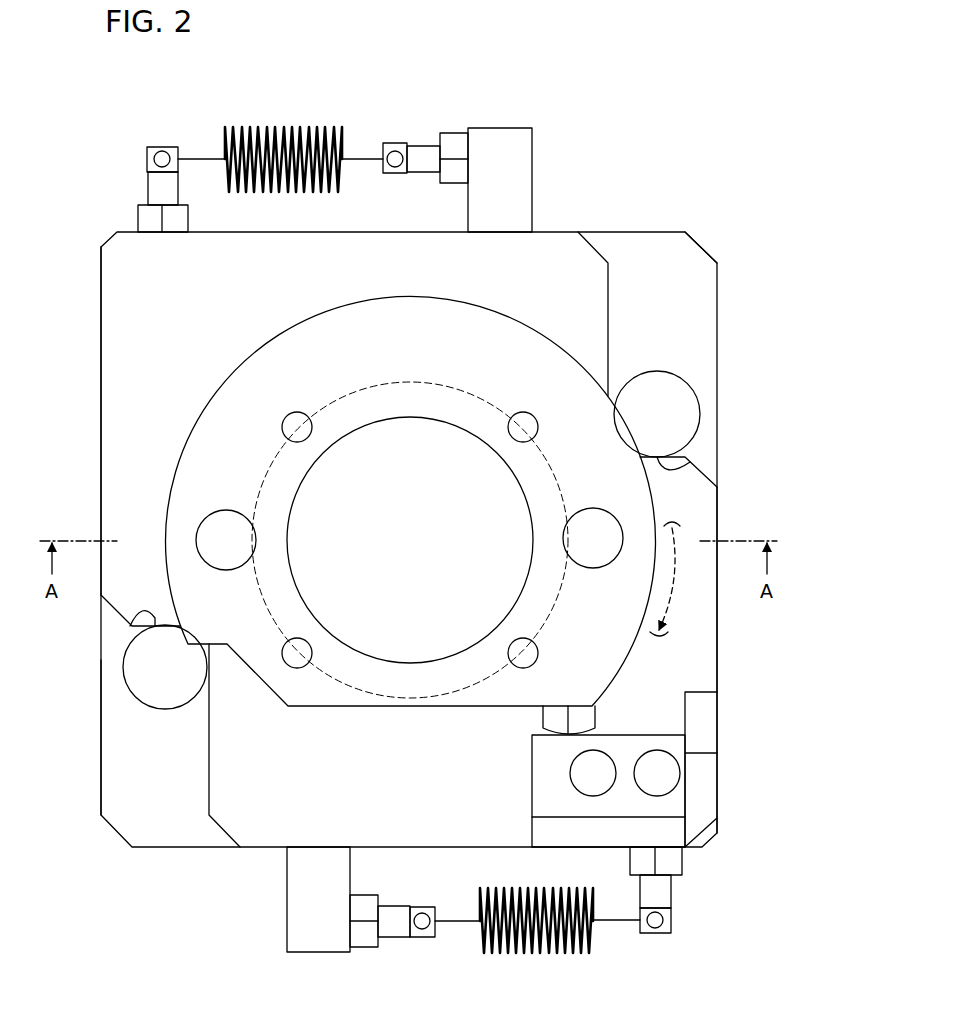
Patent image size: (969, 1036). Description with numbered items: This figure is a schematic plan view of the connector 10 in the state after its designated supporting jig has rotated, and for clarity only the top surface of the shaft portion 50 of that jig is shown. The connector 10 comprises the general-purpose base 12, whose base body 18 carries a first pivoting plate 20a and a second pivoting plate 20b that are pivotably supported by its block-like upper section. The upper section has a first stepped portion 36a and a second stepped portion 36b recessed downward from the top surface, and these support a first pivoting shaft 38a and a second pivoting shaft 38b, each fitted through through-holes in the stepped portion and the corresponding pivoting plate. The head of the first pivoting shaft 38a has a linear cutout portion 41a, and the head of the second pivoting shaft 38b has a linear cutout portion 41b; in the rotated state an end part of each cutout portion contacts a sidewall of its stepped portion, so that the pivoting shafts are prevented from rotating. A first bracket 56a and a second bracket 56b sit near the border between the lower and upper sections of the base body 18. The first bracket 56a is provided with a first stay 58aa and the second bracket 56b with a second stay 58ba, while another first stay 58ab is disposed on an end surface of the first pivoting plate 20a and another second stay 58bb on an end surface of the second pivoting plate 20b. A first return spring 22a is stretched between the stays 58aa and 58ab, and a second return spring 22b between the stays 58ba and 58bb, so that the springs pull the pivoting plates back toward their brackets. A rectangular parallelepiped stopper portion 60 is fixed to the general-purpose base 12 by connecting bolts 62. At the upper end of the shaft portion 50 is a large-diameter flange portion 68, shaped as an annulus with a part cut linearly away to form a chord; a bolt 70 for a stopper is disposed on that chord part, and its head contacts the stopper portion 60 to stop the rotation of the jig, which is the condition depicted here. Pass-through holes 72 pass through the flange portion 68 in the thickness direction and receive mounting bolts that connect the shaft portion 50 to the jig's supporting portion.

The connector 10 is at (688, 52).
The general-purpose base 12 is at (722, 297).
The base body 18 is at (648, 252).
The first pivoting plate 20a is at (717, 652).
The second pivoting plate 20b is at (101, 412).
The first return spring 22a is at (545, 932).
The second return spring 22b is at (293, 152).
The first stepped portion 36a is at (697, 258).
The second stepped portion 36b is at (127, 752).
The first pivoting shaft 38a is at (672, 411).
The second pivoting shaft 38b is at (142, 668).
The linear cutout portion 41a is at (697, 475).
The linear cutout portion 41b is at (130, 615).
The shaft portion 50 is at (421, 397).
The first bracket 56a is at (312, 913).
The second bracket 56b is at (510, 167).
The first stay 58aa is at (398, 930).
The first stay 58ab is at (662, 903).
The second stay 58ba is at (420, 152).
The second stay 58bb is at (152, 179).
The stopper portion 60 is at (548, 781).
The connecting bolts 62 is at (596, 776).
The flange portion 68 is at (319, 330).
The bolt for a stopper 70 is at (585, 719).
The pass-through holes 72 is at (297, 414).